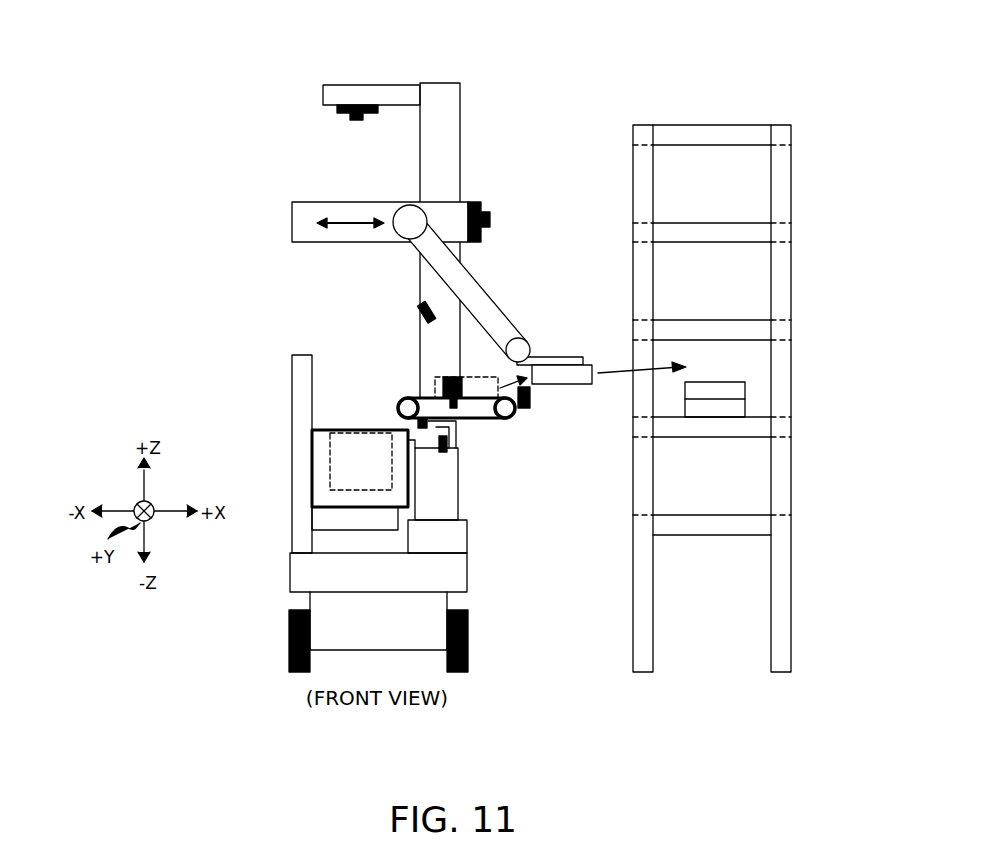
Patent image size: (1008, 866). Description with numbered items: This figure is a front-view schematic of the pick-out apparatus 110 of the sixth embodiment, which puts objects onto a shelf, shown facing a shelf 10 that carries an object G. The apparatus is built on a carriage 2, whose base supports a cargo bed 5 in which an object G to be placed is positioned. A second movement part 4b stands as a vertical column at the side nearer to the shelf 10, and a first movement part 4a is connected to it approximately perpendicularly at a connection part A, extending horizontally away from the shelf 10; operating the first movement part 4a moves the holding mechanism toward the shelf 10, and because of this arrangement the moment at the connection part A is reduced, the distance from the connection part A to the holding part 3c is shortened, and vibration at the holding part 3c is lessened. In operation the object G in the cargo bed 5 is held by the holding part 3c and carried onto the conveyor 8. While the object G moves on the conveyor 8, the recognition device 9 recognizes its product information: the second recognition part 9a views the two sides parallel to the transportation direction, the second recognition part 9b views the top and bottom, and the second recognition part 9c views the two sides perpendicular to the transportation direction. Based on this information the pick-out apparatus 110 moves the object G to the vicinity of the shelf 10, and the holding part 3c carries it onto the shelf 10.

The pick-out apparatus 110 is at (416, 338).
The shelf 10 is at (786, 134).
The carriage 2 is at (272, 598).
The cargo bed 5 is at (315, 419).
The first movement part 4a is at (330, 211).
The second movement part 4b is at (440, 187).
The connection part A is at (412, 200).
The holding part 3c is at (550, 363).
The second recognition device 9 is at (473, 422).
The second recognition part 9a is at (462, 402).
The second recognition part 9b is at (422, 309).
The second recognition part 9c is at (419, 422).
The conveyor 8 is at (492, 412).
The object G is at (478, 386).